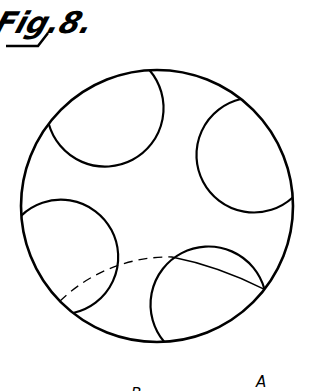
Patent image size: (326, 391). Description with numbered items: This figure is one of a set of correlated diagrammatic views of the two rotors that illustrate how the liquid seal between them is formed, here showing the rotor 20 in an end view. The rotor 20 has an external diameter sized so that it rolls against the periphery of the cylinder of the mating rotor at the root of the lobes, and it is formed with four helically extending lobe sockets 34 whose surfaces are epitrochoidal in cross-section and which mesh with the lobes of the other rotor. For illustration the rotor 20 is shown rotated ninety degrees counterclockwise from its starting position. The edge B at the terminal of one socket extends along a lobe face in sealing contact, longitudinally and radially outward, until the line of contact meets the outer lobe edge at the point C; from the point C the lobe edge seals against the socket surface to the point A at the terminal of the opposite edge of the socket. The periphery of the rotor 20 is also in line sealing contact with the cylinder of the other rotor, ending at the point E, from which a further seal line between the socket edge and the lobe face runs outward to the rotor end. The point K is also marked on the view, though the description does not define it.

The rotor 20 is at (172, 203).
The lobe sockets 34 is at (262, 147).
The point A is at (266, 290).
The edge B is at (161, 343).
The point C is at (63, 298).
The point E is at (199, 248).
The point K is at (151, 258).